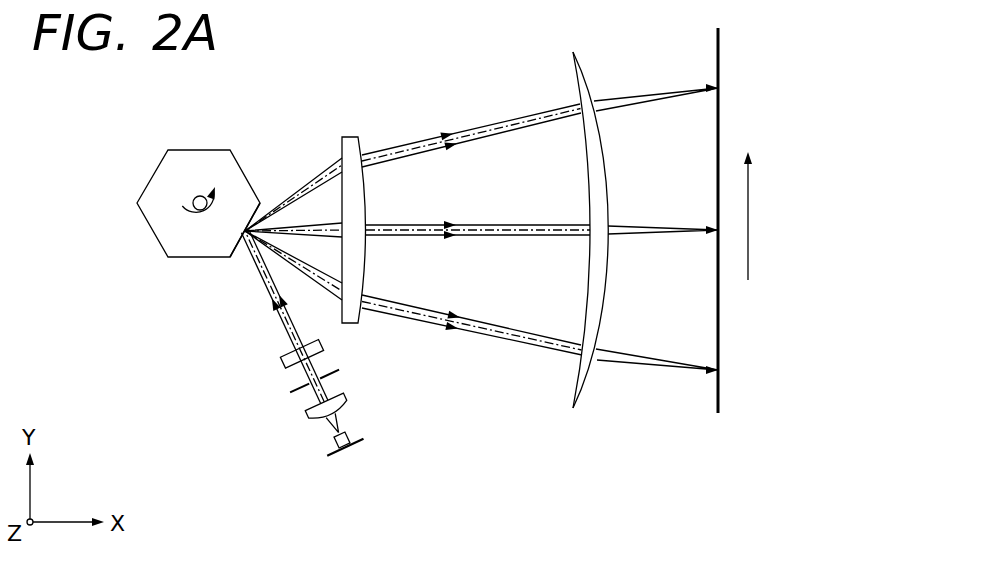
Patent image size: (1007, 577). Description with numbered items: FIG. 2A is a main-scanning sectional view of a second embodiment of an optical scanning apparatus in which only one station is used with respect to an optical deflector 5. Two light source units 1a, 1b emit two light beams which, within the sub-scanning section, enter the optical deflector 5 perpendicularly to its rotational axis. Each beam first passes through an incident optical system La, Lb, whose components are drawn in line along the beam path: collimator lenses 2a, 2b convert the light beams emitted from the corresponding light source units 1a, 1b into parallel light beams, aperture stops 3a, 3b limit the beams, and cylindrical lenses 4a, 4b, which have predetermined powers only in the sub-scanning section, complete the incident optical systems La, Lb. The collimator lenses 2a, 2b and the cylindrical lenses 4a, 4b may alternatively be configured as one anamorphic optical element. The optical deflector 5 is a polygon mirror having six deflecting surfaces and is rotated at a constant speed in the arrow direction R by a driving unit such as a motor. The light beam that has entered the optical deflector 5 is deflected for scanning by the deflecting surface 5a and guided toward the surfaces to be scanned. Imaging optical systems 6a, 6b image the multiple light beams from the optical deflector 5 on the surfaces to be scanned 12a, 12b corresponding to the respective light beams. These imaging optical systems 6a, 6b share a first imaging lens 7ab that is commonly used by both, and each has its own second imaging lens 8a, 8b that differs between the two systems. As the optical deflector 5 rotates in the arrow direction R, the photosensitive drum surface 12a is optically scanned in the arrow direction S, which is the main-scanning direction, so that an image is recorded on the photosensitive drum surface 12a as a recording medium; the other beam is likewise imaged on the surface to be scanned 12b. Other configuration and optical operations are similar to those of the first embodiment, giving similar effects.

The light source unit 1a is at (402, 447).
The light source unit 1b is at (363, 451).
The collimator lens 2a is at (271, 418).
The collimator lens 2b is at (302, 406).
The aperture stop 3a is at (258, 388).
The aperture stop 3b is at (290, 391).
The cylindrical lens 4a is at (244, 358).
The cylindrical lens 4b is at (282, 362).
The optical deflector 5 is at (198, 207).
The deflecting surface 5a is at (239, 246).
The imaging optical system 6a is at (465, 204).
The imaging optical system 6b is at (465, 204).
The first imaging lens 7ab is at (352, 137).
The second imaging lens 8a is at (539, 230).
The second imaging lens 8b is at (578, 72).
The photosensitive drum surface 12a is at (776, 219).
The surface to be scanned 12b is at (720, 42).
The incident optical system La is at (218, 339).
The incident optical system Lb is at (204, 449).
The arrow direction R is at (208, 191).
The arrow direction S is at (747, 202).